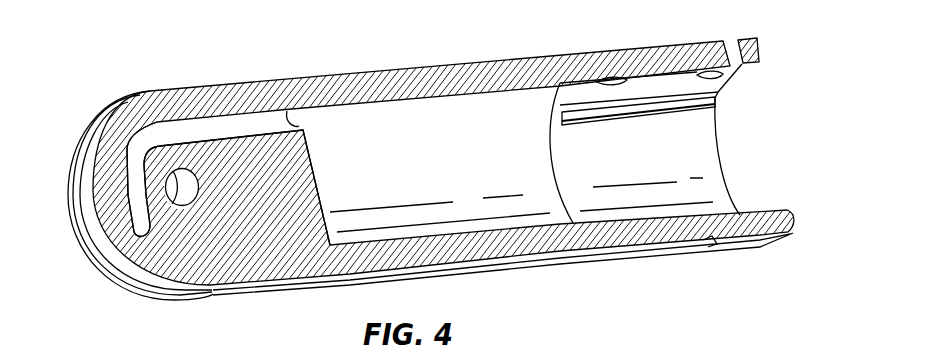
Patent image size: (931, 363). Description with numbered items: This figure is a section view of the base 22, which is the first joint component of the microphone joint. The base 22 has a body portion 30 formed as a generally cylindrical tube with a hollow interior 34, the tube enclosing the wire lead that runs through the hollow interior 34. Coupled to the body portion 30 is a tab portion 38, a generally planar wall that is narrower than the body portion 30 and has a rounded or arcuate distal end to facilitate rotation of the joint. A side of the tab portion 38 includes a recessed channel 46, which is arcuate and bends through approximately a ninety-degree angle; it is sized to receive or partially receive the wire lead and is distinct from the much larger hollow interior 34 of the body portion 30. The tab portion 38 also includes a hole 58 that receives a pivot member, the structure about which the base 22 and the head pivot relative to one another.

The base 22 is at (665, 230).
The body portion 30 is at (541, 256).
The hollow interior 34 is at (665, 158).
The tab portion 38 is at (241, 253).
The recessed channel 46 is at (141, 152).
The hole 58 is at (178, 169).